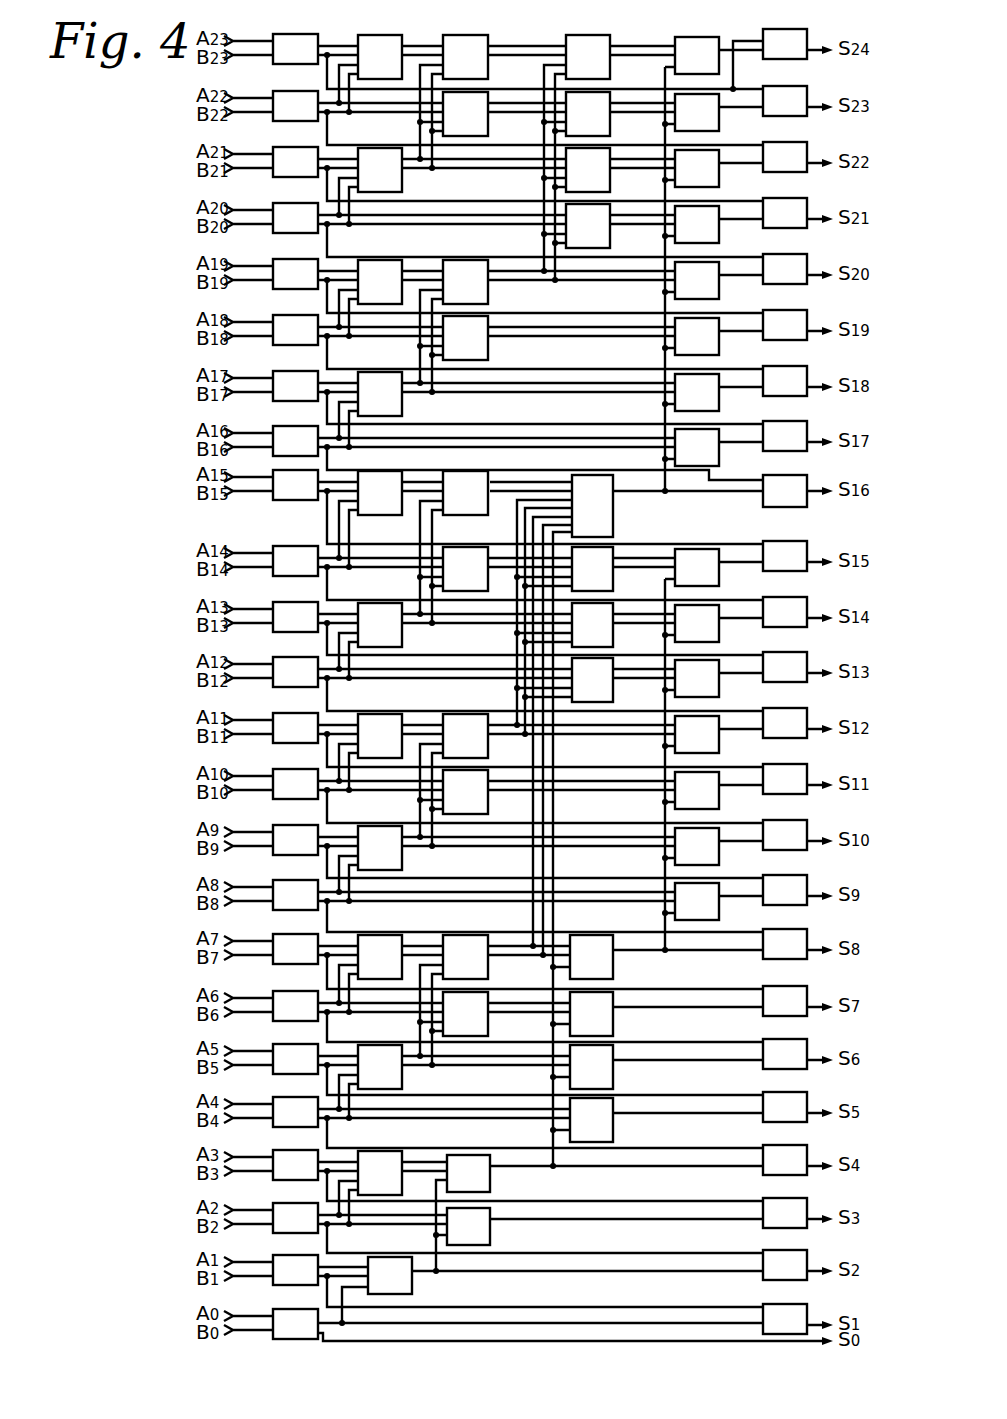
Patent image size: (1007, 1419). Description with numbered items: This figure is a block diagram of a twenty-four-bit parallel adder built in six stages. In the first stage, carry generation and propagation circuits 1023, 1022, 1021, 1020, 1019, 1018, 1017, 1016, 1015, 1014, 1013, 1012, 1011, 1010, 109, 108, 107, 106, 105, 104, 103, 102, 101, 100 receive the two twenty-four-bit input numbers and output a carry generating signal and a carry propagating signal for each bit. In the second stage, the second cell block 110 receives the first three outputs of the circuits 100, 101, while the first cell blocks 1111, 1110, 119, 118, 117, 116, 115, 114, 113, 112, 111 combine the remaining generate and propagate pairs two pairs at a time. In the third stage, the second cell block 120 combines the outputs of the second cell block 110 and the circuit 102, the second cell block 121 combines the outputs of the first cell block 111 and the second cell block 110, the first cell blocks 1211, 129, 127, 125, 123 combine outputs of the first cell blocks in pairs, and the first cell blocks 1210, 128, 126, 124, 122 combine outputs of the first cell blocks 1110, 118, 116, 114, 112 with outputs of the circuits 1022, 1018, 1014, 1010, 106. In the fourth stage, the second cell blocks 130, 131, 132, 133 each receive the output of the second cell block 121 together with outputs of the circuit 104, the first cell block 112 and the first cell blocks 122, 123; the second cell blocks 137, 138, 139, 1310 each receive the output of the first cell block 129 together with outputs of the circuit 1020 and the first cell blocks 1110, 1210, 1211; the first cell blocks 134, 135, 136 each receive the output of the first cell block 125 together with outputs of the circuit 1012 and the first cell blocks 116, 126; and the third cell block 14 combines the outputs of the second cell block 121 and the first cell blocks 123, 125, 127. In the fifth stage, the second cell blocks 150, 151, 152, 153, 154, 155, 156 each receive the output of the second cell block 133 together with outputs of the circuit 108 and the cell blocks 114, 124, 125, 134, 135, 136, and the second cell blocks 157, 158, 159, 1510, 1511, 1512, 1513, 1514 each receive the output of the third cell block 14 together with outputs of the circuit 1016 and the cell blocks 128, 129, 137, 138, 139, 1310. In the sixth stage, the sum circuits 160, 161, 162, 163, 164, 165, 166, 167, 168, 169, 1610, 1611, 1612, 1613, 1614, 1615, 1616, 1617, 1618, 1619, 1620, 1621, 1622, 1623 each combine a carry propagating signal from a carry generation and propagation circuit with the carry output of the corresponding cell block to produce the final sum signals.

The carry generation & propagation circuit 1023 is at (282, 62).
The carry generation & propagation circuit 1022 is at (282, 119).
The carry generation & propagation circuit 1021 is at (282, 175).
The carry generation & propagation circuit 1020 is at (282, 231).
The carry generation & propagation circuit 1019 is at (282, 287).
The carry generation & propagation circuit 1018 is at (282, 343).
The carry generation & propagation circuit 1017 is at (282, 399).
The carry generation & propagation circuit 1016 is at (282, 454).
The carry generation & propagation circuit 1015 is at (280, 500).
The carry generation & propagation circuit 1014 is at (282, 574).
The carry generation & propagation circuit 1013 is at (282, 630).
The carry generation & propagation circuit 1012 is at (282, 685).
The carry generation & propagation circuit 1011 is at (282, 741).
The carry generation & propagation circuit 1010 is at (282, 797).
The carry generation & propagation circuit 109 is at (282, 853).
The carry generation & propagation circuit 108 is at (282, 908).
The carry generation & propagation circuit 107 is at (282, 962).
The carry generation & propagation circuit 106 is at (282, 1019).
The carry generation & propagation circuit 105 is at (282, 1072).
The carry generation & propagation circuit 104 is at (282, 1125).
The carry generation & propagation circuit 103 is at (282, 1178).
The carry generation & propagation circuit 102 is at (282, 1231).
The carry generation & propagation circuit 101 is at (282, 1283).
The carry generation & propagation circuit 100 is at (282, 1315).
The first cell block 1111 is at (388, 36).
The first cell block 1110 is at (404, 186).
The first cell block 119 is at (392, 260).
The first cell block 118 is at (404, 410).
The first cell block 117 is at (372, 518).
The first cell block 116 is at (404, 641).
The first cell block 115 is at (392, 714).
The first cell block 114 is at (404, 864).
The first cell block 113 is at (392, 935).
The first cell block 112 is at (404, 1083).
The first cell block 111 is at (392, 1151).
The second cell block 110 is at (414, 1288).
The first cell block 1211 is at (488, 58).
The first cell block 1210 is at (488, 115).
The first cell block 129 is at (484, 283).
The first cell block 128 is at (484, 339).
The first cell block 127 is at (470, 516).
The first cell block 126 is at (468, 549).
The first cell block 125 is at (484, 737).
The first cell block 124 is at (484, 793).
The first cell block 123 is at (484, 958).
The first cell block 122 is at (484, 1015).
The second cell block 121 is at (487, 1174).
The second cell block 120 is at (487, 1227).
The second cell block 1310 is at (611, 58).
The second cell block 139 is at (607, 115).
The second cell block 138 is at (607, 171).
The second cell block 137 is at (607, 227).
The first cell block 136 is at (611, 570).
The first cell block 135 is at (611, 626).
The first cell block 134 is at (611, 681).
The second cell block 133 is at (610, 958).
The second cell block 132 is at (610, 1015).
The second cell block 131 is at (610, 1068).
The second cell block 130 is at (610, 1121).
The third cell block 14 is at (614, 527).
The second cell block 1514 is at (692, 38).
The second cell block 1513 is at (721, 131).
The second cell block 1512 is at (721, 187).
The second cell block 1511 is at (721, 243).
The second cell block 1510 is at (721, 299).
The second cell block 159 is at (721, 355).
The second cell block 158 is at (721, 411).
The second cell block 157 is at (721, 466).
The second cell block 156 is at (721, 586).
The second cell block 155 is at (721, 642).
The second cell block 154 is at (721, 697).
The second cell block 153 is at (721, 753).
The second cell block 152 is at (721, 809).
The second cell block 151 is at (721, 865).
The second cell block 150 is at (721, 920).
The sum circuit 1623 is at (808, 58).
The sum circuit 1622 is at (808, 115).
The sum circuit 1621 is at (808, 171).
The sum circuit 1620 is at (808, 227).
The sum circuit 1619 is at (808, 283).
The sum circuit 1618 is at (808, 339).
The sum circuit 1617 is at (808, 395).
The sum circuit 1616 is at (808, 450).
The sum circuit 1615 is at (808, 506).
The sum circuit 1614 is at (808, 570).
The sum circuit 1613 is at (808, 626).
The sum circuit 1612 is at (808, 681).
The sum circuit 1611 is at (808, 737).
The sum circuit 1610 is at (808, 793).
The sum circuit 169 is at (808, 849).
The sum circuit 168 is at (808, 904).
The sum circuit 167 is at (808, 958).
The sum circuit 166 is at (808, 1015).
The sum circuit 165 is at (808, 1068).
The sum circuit 164 is at (808, 1121).
The sum circuit 163 is at (808, 1174).
The sum circuit 162 is at (808, 1227).
The sum circuit 161 is at (808, 1279).
The sum circuit 160 is at (762, 1304).